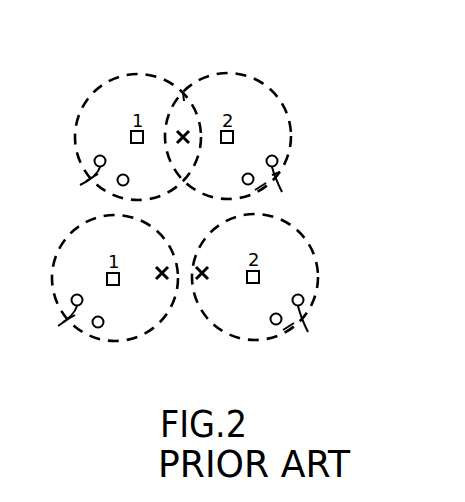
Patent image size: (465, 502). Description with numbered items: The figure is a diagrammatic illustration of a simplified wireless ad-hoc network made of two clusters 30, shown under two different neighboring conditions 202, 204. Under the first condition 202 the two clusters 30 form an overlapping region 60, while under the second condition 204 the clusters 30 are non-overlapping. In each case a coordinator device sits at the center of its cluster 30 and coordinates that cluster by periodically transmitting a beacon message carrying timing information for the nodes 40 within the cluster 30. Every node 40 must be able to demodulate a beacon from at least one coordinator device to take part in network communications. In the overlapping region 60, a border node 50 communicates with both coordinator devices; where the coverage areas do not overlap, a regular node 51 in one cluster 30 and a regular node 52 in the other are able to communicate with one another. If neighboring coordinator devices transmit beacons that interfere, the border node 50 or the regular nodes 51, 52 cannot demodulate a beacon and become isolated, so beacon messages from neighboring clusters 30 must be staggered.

The cluster 30 is at (78, 116).
The node 40 is at (118, 182).
The border node 50 is at (189, 143).
The regular node 51 is at (161, 280).
The regular node 52 is at (207, 278).
The overlapping region 60 is at (183, 93).
The neighboring condition 202 is at (267, 62).
The neighboring condition 204 is at (179, 345).